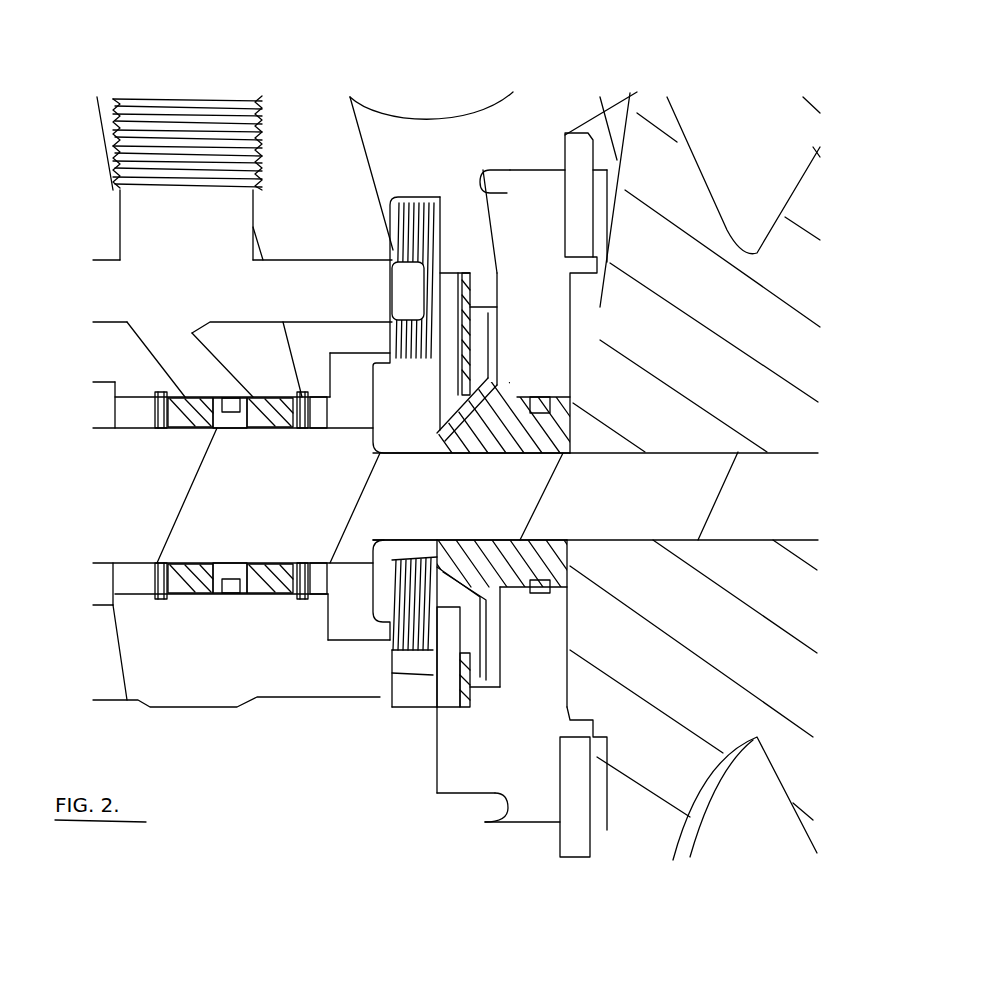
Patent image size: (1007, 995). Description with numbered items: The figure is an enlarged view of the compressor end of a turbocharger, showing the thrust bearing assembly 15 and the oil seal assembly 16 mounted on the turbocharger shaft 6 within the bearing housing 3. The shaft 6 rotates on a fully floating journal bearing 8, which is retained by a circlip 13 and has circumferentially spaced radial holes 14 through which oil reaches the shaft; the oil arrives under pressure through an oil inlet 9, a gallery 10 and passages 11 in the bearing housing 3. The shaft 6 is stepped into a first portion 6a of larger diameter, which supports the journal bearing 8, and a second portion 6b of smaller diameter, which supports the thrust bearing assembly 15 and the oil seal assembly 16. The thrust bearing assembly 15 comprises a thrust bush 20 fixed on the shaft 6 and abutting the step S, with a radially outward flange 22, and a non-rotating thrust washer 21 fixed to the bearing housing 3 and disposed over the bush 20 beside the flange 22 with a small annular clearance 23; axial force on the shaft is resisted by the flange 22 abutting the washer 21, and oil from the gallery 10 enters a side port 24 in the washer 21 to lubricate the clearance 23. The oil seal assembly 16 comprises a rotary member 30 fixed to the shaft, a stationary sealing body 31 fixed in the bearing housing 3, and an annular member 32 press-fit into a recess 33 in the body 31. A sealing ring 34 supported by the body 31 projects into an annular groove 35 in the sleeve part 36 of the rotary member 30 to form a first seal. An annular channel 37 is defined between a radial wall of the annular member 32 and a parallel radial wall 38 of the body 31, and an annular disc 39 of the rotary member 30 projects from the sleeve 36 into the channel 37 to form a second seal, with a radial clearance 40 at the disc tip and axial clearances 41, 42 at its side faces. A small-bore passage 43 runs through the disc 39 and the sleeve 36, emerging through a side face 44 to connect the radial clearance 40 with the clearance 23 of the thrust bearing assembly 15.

The bearing housing 3 is at (412, 135).
The turbocharger shaft 6 is at (772, 427).
The first portion of the turbocharger shaft 6a is at (134, 498).
The second portion of the turbocharger shaft 6b is at (780, 504).
The journal bearing 8 is at (258, 590).
The oil inlet 9 is at (133, 205).
The gallery 10 is at (198, 293).
The passages 11 is at (160, 342).
The circlip 13 is at (160, 600).
The radial holes 14 is at (225, 575).
The thrust bearing assembly 15 is at (378, 235).
The oil seal assembly 16 is at (580, 334).
The thrust bush 20 is at (403, 562).
The thrust washer 21 is at (435, 270).
The flange 22 is at (383, 560).
The annular clearance 23 is at (440, 625).
The side port 24 is at (402, 277).
The rotary member 30 is at (512, 187).
The sealing body 31 is at (548, 187).
The annular member 32 is at (455, 300).
The recess 33 is at (477, 310).
The sealing ring 34 is at (550, 663).
The annular groove 35 is at (556, 580).
The sleeve part 36 is at (567, 568).
The annular channel 37 is at (473, 687).
The radial wall 38 is at (492, 687).
The annular disc 39 is at (480, 240).
The radial clearance 40 is at (492, 713).
The axial clearance 41 is at (503, 687).
The axial clearance 42 is at (465, 800).
The small-bore passage 43 is at (490, 710).
The side face of the sleeve 44 is at (437, 425).
The step S is at (373, 437).